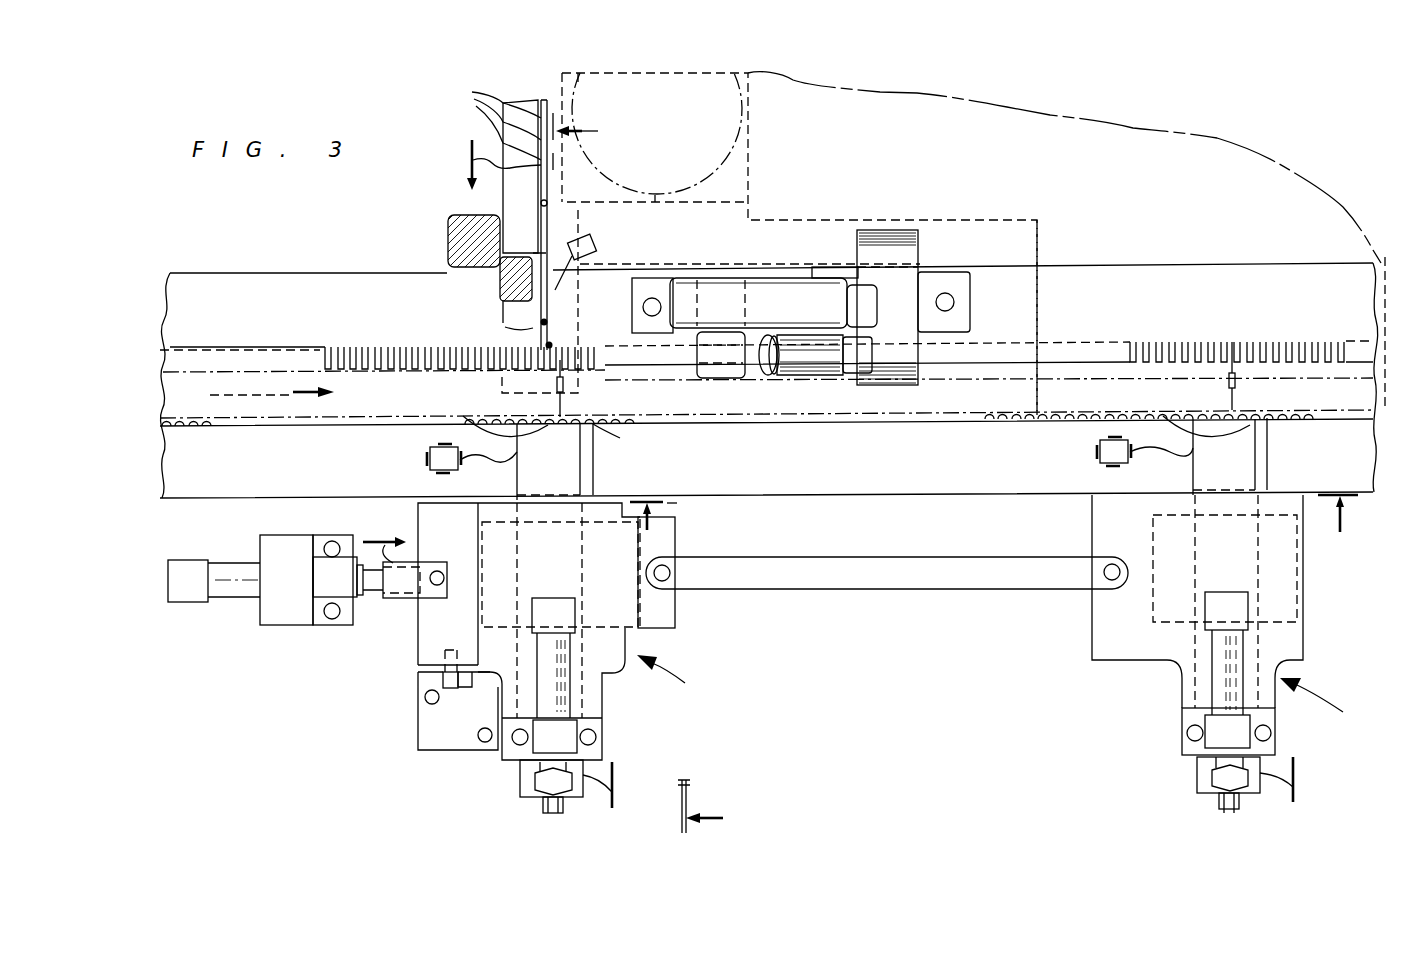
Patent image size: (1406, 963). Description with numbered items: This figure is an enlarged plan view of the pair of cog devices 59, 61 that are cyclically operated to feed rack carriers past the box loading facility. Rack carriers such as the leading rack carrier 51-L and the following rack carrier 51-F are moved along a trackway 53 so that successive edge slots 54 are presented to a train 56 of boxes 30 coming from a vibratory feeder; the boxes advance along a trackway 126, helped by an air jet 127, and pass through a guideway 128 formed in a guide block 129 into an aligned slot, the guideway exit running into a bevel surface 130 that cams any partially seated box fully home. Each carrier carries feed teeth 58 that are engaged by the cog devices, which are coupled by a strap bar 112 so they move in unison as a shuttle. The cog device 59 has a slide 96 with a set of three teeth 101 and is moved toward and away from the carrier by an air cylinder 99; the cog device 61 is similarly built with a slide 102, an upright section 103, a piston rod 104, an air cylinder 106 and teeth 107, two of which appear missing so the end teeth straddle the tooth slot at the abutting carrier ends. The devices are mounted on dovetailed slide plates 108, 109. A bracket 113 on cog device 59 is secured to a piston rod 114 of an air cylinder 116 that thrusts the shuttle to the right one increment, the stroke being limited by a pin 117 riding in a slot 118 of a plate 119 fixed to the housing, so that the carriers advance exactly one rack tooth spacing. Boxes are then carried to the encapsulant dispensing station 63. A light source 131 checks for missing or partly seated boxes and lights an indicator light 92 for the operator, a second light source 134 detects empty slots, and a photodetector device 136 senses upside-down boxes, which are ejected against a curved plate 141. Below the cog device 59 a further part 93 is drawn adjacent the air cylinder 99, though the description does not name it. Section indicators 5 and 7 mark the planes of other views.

The boxes 30 is at (1207, 342).
The section line 5 is at (646, 473).
The train of boxes 56 is at (515, 215).
The light source 131 is at (506, 312).
The bevel surface 130 is at (551, 344).
The trackway 126 is at (542, 210).
The air jet 127 is at (576, 272).
The guideway 128 is at (548, 321).
The guide block 129 is at (505, 327).
The following rack carrier 51-F is at (263, 388).
The leading rack carrier 51-L is at (1083, 372).
The edge slots 54 is at (397, 357).
The curved plate 141 is at (900, 282).
The light source 134 is at (705, 360).
The photodetector device 136 is at (817, 377).
The encapsulant dispensing station 63 is at (1037, 372).
The trackway 53 is at (825, 496).
The teeth 101 is at (470, 420).
The slide 96 is at (562, 463).
The feed teeth 58 is at (609, 425).
The teeth 107 is at (1163, 417).
The slide 102 is at (1250, 467).
The strap bar 112 is at (907, 558).
The section line 7 is at (994, 526).
The air cylinder 116 is at (223, 565).
The piston rod 114 is at (368, 600).
The bracket 113 is at (398, 600).
The cog device 59 is at (563, 631).
The dovetailed slide plate 108 is at (675, 617).
The air cylinder 99 is at (563, 680).
The light 92 is at (520, 795).
The adjusting nut 93 is at (547, 772).
The pin 117 is at (440, 682).
The plate 119 is at (418, 713).
The slot 118 is at (462, 688).
The dovetailed slide plate 109 is at (1093, 645).
The air cylinder 106 is at (1218, 683).
The cog device 61 is at (1325, 702).
The upright section 103 is at (1200, 786).
The piston rod 104 is at (1213, 763).